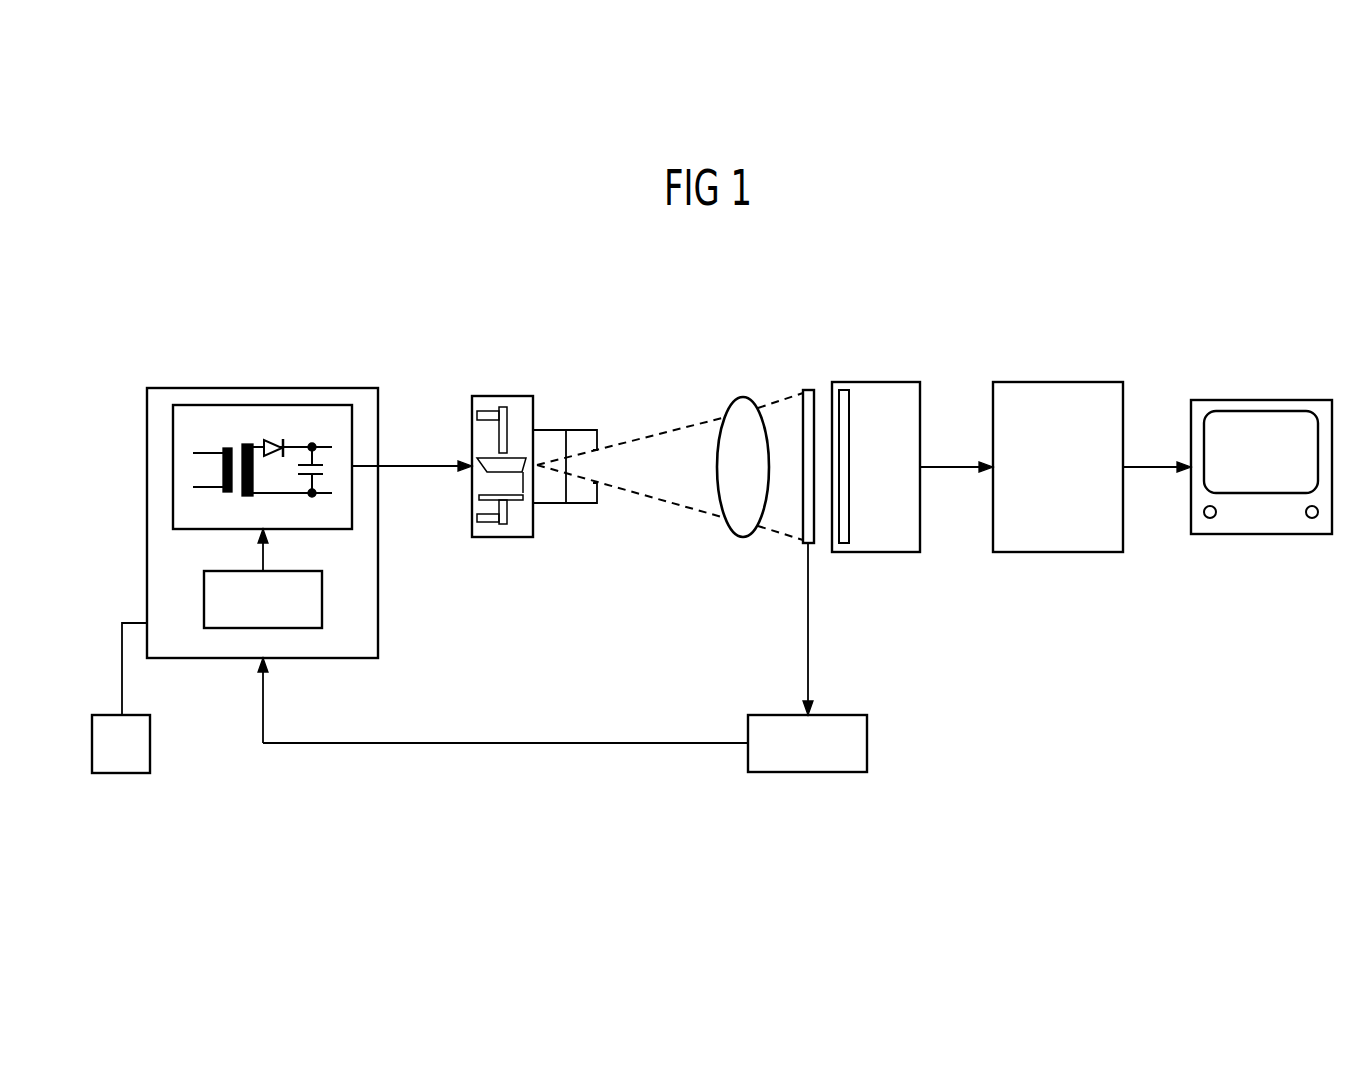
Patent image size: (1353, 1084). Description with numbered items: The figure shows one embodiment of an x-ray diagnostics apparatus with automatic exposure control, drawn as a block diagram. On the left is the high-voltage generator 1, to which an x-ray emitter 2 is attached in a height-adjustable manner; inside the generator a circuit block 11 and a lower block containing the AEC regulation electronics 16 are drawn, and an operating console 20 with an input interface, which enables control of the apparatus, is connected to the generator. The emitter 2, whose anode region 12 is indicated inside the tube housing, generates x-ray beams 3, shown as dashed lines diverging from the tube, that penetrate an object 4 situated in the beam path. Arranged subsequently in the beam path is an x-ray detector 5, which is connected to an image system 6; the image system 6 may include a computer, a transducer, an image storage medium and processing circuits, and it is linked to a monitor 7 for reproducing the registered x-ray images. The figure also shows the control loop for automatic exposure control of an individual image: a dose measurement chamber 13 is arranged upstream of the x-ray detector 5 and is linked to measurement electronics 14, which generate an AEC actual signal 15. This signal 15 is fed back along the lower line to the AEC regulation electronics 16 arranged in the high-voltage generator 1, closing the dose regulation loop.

The high-voltage generator 1 is at (323, 405).
The high-voltage generator circuit 11 is at (243, 423).
The AEC regulation electronics 16 is at (323, 600).
The operating console 20 is at (121, 773).
The x-ray emitter 2 is at (534, 459).
The anode 12 is at (519, 524).
The x-ray beams 3 is at (679, 430).
The object 4 is at (741, 400).
The dose measurement chamber 13 is at (806, 390).
The x-ray detector 5 is at (875, 382).
The image system 6 is at (1057, 382).
The monitor 7 is at (1260, 400).
The measurement electronics 14 is at (867, 745).
The AEC actual signal 15 is at (594, 743).